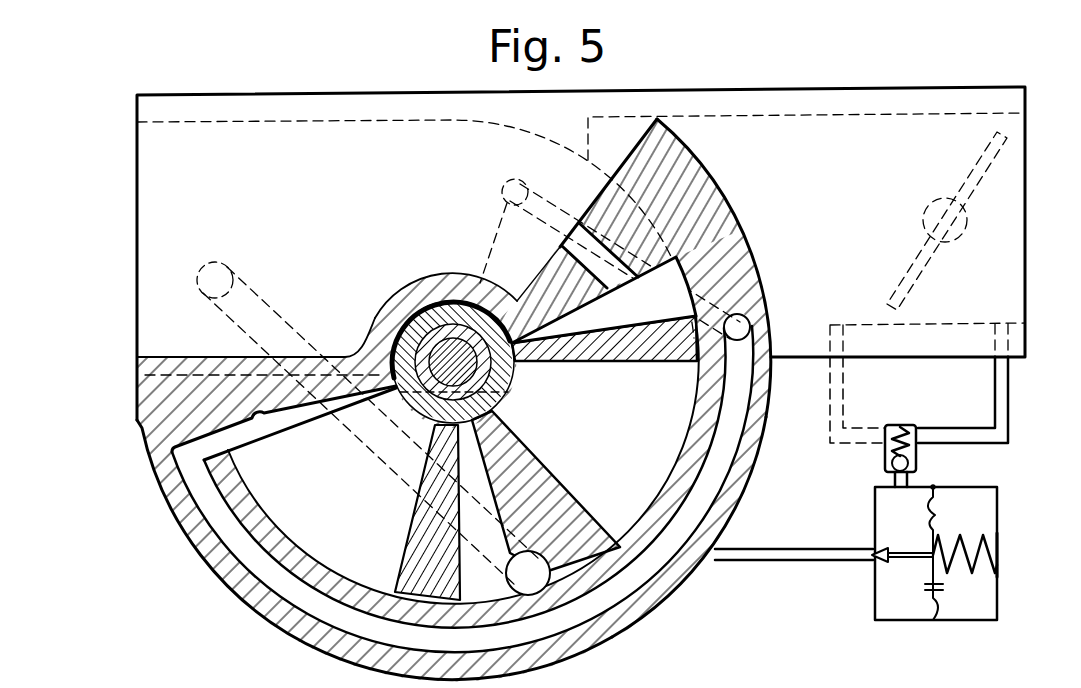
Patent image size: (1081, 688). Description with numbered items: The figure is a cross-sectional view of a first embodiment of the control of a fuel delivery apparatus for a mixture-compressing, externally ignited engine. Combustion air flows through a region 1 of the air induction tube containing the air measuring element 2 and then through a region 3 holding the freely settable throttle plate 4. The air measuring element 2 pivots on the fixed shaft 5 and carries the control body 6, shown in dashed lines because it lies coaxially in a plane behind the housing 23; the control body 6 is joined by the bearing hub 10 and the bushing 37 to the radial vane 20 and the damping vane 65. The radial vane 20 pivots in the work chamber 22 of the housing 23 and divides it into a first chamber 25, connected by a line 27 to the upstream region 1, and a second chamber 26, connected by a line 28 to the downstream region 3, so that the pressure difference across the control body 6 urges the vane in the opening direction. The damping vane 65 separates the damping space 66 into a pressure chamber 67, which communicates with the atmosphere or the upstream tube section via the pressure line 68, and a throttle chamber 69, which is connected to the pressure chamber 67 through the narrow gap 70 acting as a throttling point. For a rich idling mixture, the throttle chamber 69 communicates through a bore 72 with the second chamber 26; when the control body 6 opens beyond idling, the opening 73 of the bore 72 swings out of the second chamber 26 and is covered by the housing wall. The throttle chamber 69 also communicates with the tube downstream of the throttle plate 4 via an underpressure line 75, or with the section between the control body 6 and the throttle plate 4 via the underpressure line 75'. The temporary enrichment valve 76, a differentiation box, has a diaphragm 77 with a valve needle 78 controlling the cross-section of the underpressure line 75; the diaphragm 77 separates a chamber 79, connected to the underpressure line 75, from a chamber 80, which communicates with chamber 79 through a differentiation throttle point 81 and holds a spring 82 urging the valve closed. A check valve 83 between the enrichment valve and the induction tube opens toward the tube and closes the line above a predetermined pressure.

The region of the air induction tube 1 is at (315, 145).
The air measuring element 2 is at (395, 283).
The region of the induction tube 3 is at (828, 135).
The throttle plate 4 is at (985, 148).
The fixed shaft 5 is at (452, 357).
The control body 6 is at (718, 192).
The bearing hub 10 is at (393, 303).
The radial vane 20 is at (420, 540).
The work chamber 22 is at (338, 487).
The housing 23 is at (135, 427).
The first chamber 25 is at (487, 587).
The second chamber 26 is at (262, 583).
The line 27 is at (410, 475).
The line 28 is at (233, 543).
The bushing 37 is at (427, 330).
The damping vane 65 is at (628, 370).
The damping space 66 is at (640, 439).
The pressure chamber 67 is at (657, 297).
The pressure line 68 is at (548, 252).
The throttle chamber 69 is at (660, 470).
The narrow gap 70 is at (748, 290).
The bore 72 is at (522, 397).
The opening 73 is at (398, 400).
The underpressure line 75 is at (887, 476).
The underpressure line 75' is at (859, 400).
The temporary enrichment valve 76 is at (873, 598).
The diaphragm 77 is at (930, 495).
The valve needle 78 is at (882, 553).
The chamber 79 is at (890, 508).
The chamber 80 is at (990, 505).
The differentiation throttle point 81 is at (940, 600).
The spring 82 is at (990, 580).
The check valve 83 is at (888, 462).